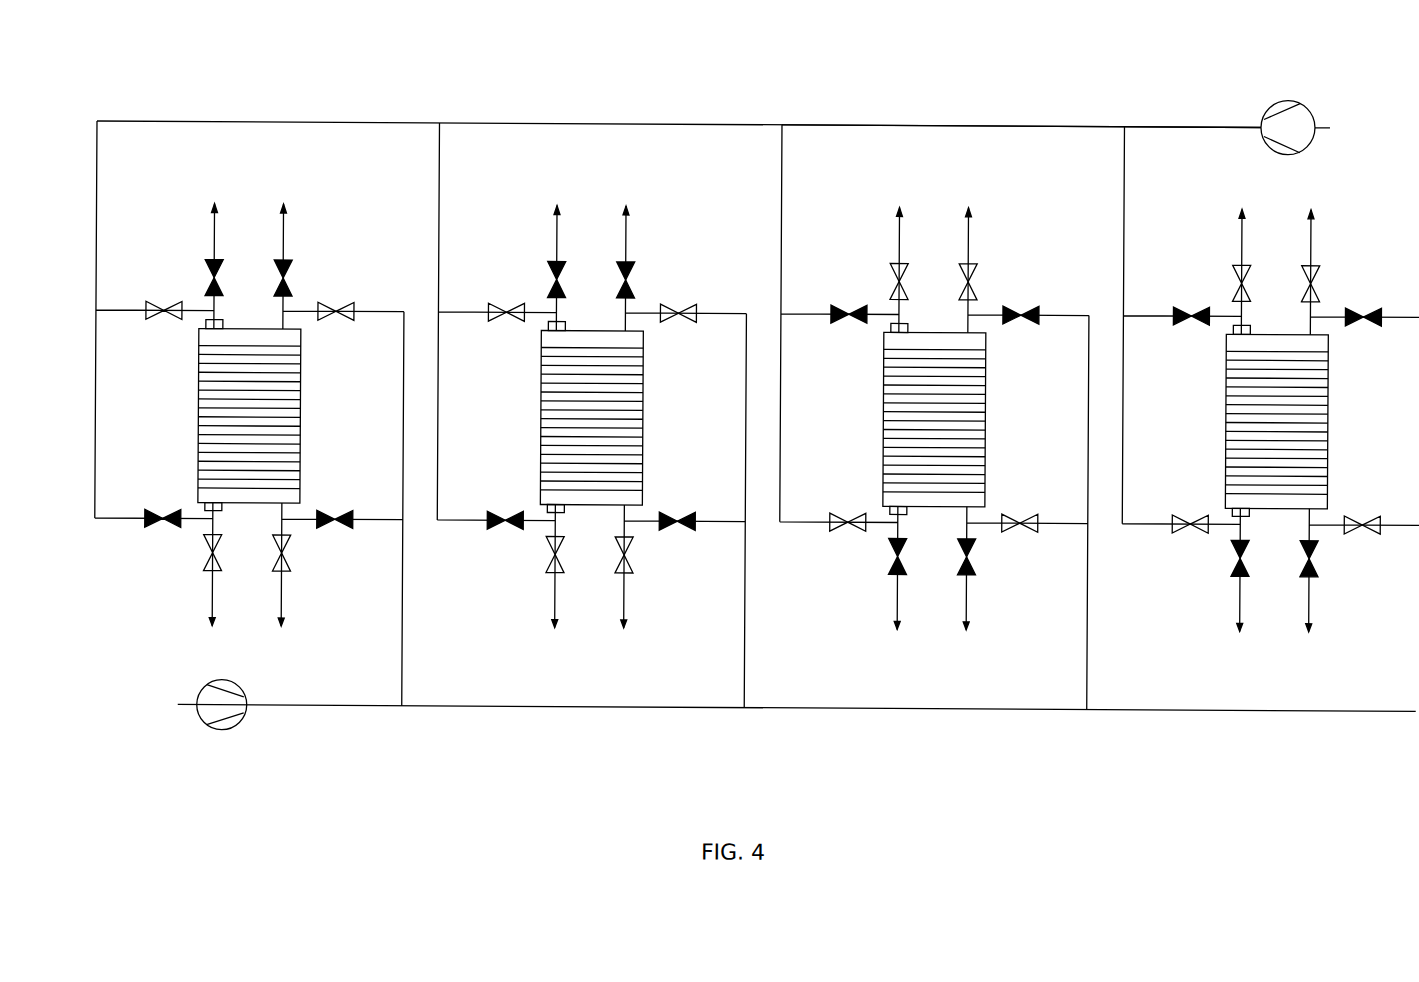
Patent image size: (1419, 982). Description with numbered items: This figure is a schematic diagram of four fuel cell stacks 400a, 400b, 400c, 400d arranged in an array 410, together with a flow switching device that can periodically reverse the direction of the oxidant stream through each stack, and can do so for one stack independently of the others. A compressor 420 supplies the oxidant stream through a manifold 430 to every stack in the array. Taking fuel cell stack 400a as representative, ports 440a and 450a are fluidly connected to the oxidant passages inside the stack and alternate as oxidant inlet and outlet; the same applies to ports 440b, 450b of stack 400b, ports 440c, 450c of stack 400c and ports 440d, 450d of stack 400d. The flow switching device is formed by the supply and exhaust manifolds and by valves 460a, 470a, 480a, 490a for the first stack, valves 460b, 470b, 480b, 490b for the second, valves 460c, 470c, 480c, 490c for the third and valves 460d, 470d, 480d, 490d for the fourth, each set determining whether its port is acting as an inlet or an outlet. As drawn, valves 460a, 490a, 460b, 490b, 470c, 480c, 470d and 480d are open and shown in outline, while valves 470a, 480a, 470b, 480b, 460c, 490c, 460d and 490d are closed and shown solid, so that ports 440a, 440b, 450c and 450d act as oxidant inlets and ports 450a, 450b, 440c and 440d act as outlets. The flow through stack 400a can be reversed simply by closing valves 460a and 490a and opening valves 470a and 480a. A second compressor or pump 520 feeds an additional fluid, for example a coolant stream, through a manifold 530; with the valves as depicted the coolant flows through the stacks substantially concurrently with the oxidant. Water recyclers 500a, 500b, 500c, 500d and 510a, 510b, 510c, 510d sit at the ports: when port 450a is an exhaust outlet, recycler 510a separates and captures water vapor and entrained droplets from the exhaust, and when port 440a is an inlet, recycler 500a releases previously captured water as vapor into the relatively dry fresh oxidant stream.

The array 410 is at (510, 70).
The compressor 420 is at (1345, 81).
The manifold 430 is at (987, 121).
The compressor or pump 520 is at (231, 705).
The manifold 530 is at (555, 705).
The fuel cell stack 400a is at (199, 410).
The fuel cell stack 400b is at (542, 410).
The fuel cell stack 400c is at (884, 410).
The fuel cell stack 400d is at (1226, 410).
The port 440a is at (217, 330).
The port 440b is at (560, 330).
The port 440c is at (902, 330).
The port 440d is at (1244, 330).
The port 450a is at (213, 500).
The port 450b is at (556, 500).
The port 450c is at (898, 500).
The port 450d is at (1240, 500).
The valve 460a is at (186, 306).
The valve 460b is at (528, 306).
The valve 460c is at (871, 306).
The valve 460d is at (1214, 306).
The valve 470a is at (208, 265).
The valve 470b is at (550, 265).
The valve 470c is at (893, 265).
The valve 470d is at (1236, 265).
The valve 480a is at (186, 520).
The valve 480b is at (528, 520).
The valve 480c is at (871, 520).
The valve 480d is at (1214, 520).
The valve 490a is at (213, 567).
The valve 490b is at (556, 567).
The valve 490c is at (898, 567).
The valve 490d is at (1240, 567).
The water recycler 500a is at (207, 323).
The water recycler 500b is at (550, 323).
The water recycler 500c is at (892, 323).
The water recycler 500d is at (1234, 323).
The water recycler 510a is at (207, 505).
The water recycler 510b is at (550, 505).
The water recycler 510c is at (892, 505).
The water recycler 510d is at (1234, 505).